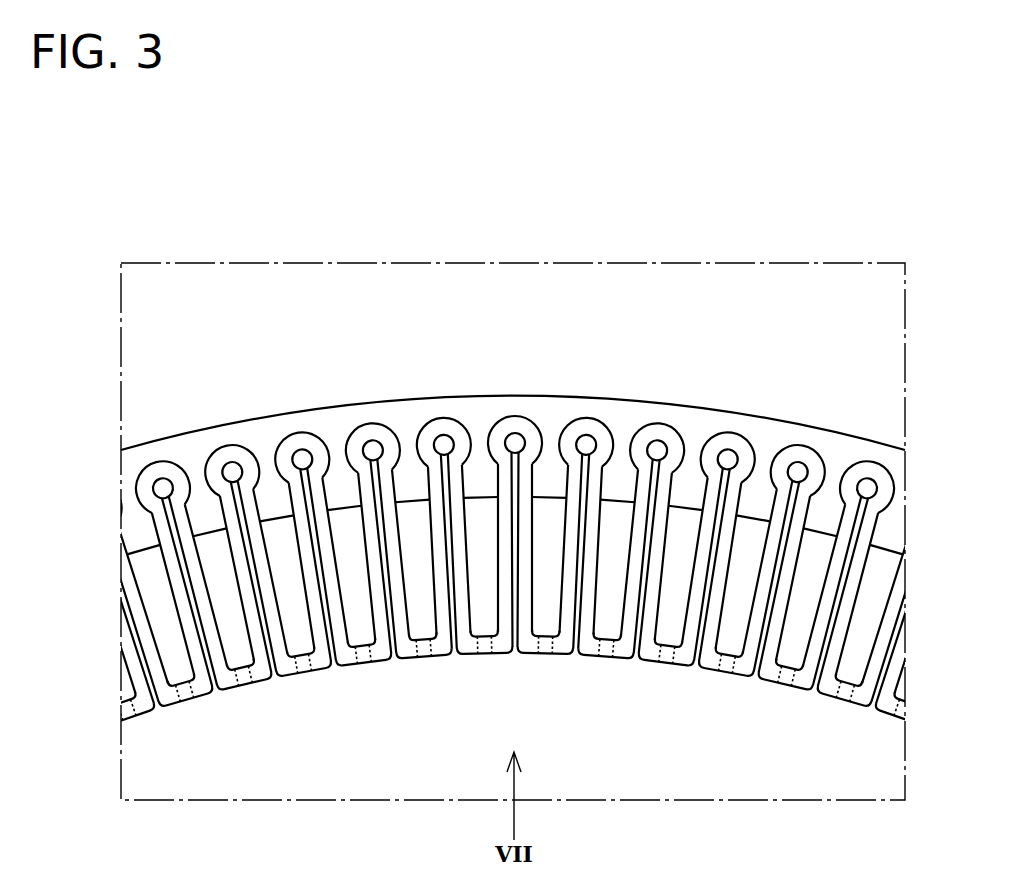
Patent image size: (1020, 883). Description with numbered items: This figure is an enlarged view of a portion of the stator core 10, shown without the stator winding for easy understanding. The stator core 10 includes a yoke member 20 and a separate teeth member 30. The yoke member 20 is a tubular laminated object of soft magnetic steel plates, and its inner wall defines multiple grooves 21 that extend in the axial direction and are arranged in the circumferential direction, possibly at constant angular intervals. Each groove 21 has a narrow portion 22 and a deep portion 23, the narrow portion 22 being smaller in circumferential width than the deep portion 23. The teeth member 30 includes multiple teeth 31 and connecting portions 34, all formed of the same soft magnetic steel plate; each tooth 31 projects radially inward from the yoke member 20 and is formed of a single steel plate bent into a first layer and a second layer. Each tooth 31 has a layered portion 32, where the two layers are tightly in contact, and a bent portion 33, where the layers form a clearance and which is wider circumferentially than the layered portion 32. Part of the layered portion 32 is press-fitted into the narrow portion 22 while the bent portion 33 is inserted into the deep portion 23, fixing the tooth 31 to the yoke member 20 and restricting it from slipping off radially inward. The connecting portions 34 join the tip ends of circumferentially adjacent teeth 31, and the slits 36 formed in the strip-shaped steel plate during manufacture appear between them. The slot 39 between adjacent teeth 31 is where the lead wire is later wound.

The stator core 10 is at (50, 372).
The yoke member 20 is at (156, 440).
The groove 21 is at (367, 335).
The narrow portion 22 is at (504, 478).
The deep portion 23 is at (506, 428).
The teeth member 30 is at (142, 469).
The tooth 31 is at (717, 724).
The layered portion 32 is at (523, 555).
The bent portion 33 is at (530, 448).
The connecting portion 34 is at (488, 652).
The slit 36 is at (485, 655).
The slot 39 is at (480, 560).